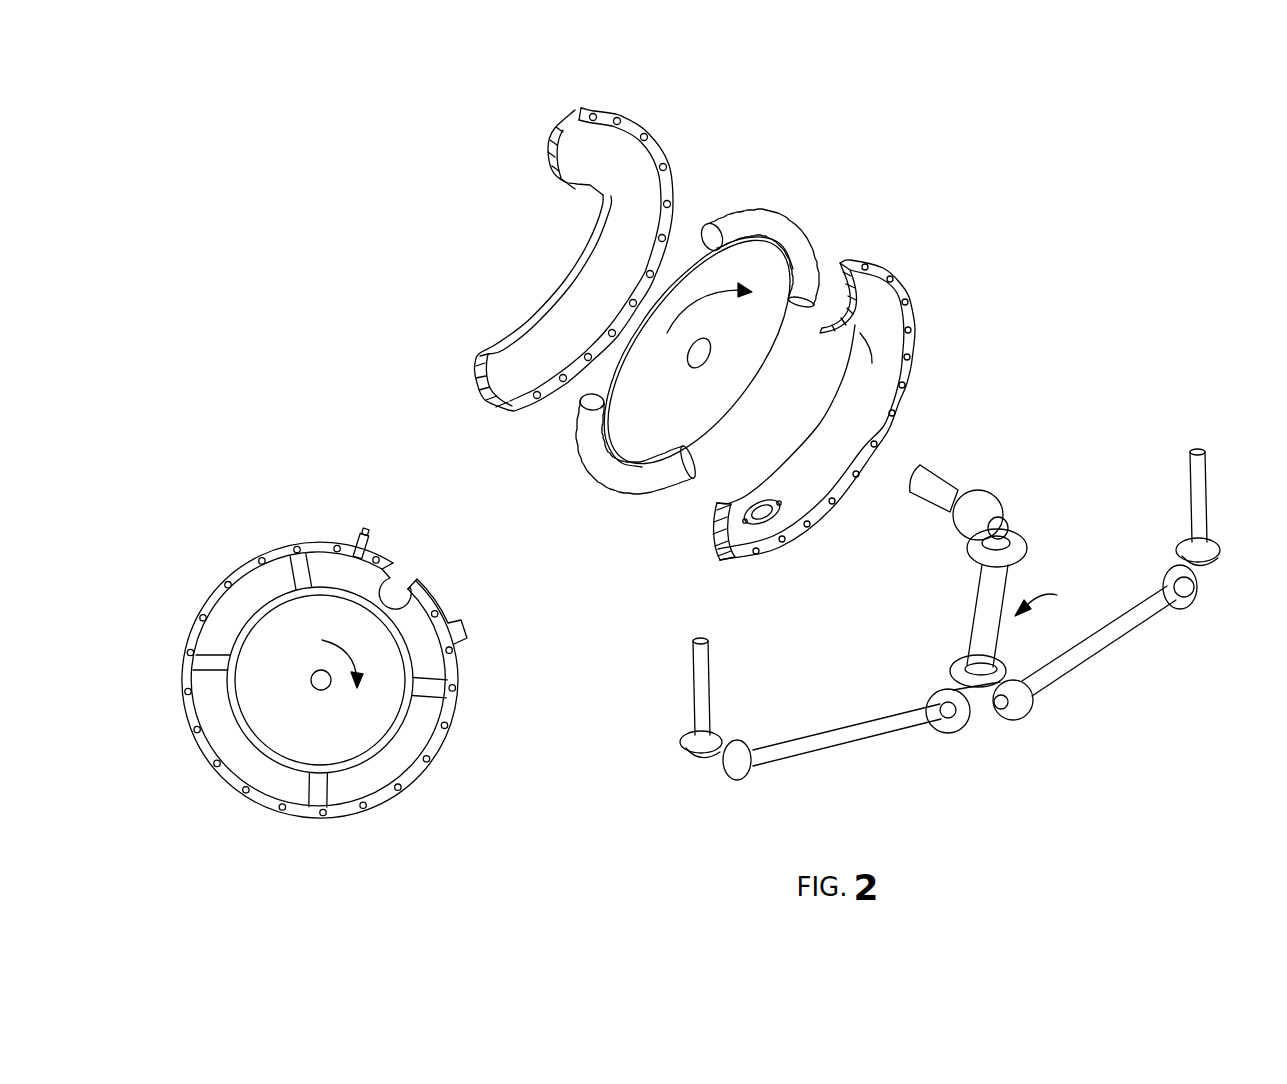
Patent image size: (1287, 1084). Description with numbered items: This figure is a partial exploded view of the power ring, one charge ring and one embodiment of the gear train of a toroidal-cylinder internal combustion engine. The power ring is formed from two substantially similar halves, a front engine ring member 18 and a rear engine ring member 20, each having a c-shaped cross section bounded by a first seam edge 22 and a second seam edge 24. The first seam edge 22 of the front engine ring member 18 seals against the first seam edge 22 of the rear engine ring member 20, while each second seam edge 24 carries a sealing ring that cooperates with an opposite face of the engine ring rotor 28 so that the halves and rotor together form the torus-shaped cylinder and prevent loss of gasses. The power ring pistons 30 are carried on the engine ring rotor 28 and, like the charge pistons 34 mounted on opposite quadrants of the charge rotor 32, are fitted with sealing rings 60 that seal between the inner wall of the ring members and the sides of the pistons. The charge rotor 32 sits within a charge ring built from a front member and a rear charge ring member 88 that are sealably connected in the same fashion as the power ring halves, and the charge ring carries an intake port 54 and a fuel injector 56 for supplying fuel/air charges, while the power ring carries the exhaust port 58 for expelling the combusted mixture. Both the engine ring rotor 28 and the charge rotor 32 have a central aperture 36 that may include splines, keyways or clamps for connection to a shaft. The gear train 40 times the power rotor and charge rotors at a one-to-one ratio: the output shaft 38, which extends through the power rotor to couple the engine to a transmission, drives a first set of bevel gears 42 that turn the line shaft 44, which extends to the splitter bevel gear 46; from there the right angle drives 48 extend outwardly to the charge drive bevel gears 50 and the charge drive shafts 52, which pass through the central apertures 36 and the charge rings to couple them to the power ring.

The front engine ring member 18 is at (897, 340).
The rear engine ring member 20 is at (572, 118).
The first seam edge 22 is at (668, 150).
The second seam edge 24 is at (504, 336).
The engine ring rotor 28 is at (687, 416).
The power ring piston 30 is at (795, 237).
The charge rotor 32 is at (353, 680).
The charge piston 34 is at (250, 600).
The aperture 36 is at (704, 366).
The output shaft 38 is at (950, 489).
The gear train 40 is at (1049, 601).
The first set of bevel gears 42 is at (1002, 518).
The line shaft 44 is at (972, 633).
The splitter bevel gear 46 is at (980, 673).
The right angle drive 48 is at (838, 740).
The charge drive bevel gear 50 is at (722, 744).
The charge drive shaft 52 is at (690, 706).
The intake port 54 is at (464, 621).
The fuel injector 56 is at (372, 532).
The exhaust port 58 is at (760, 523).
The sealing ring 60 is at (750, 228).
The rear charge ring member 88 is at (283, 790).